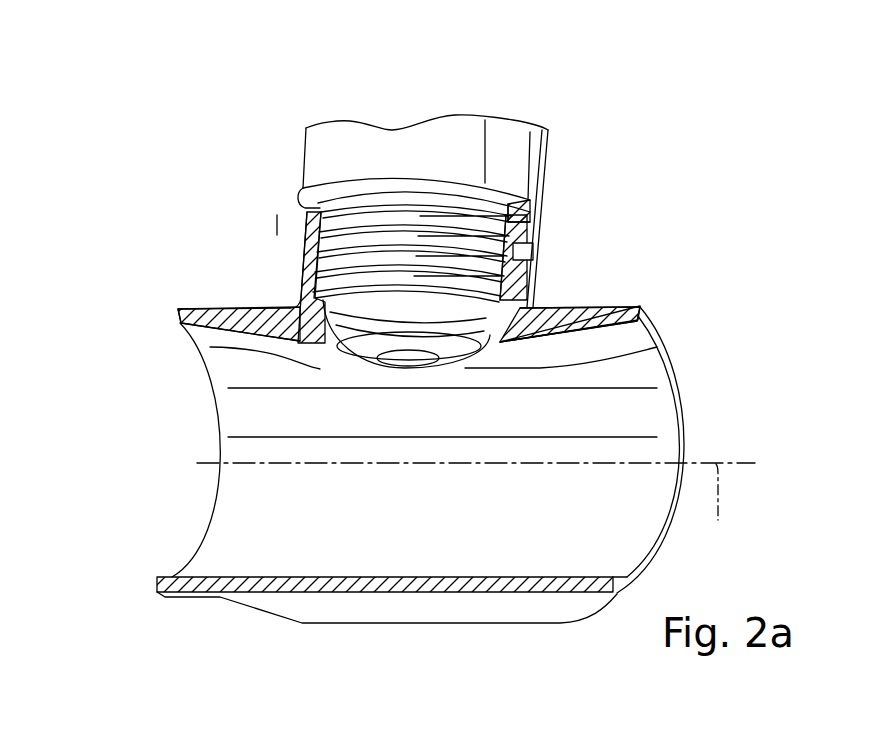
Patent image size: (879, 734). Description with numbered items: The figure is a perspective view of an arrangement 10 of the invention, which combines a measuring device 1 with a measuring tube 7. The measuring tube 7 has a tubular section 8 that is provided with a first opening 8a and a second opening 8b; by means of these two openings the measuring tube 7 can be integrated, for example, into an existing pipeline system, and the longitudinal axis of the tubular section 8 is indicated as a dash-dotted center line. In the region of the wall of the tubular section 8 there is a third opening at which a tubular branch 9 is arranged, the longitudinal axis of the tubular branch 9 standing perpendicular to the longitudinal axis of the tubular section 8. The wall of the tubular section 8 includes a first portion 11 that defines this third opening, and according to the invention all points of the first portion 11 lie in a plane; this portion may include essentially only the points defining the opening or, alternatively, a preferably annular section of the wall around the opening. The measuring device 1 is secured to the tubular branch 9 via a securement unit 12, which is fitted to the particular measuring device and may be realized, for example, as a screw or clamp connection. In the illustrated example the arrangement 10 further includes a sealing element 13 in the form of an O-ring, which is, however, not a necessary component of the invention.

The measuring device 1 is at (452, 98).
The measuring tube 7 is at (148, 347).
The tubular section 8 is at (191, 607).
The first opening 8a is at (146, 468).
The second opening 8b is at (706, 427).
The tubular branch 9 is at (286, 249).
The arrangement 10 is at (124, 98).
The first portion 11 is at (327, 362).
The securement unit 12 is at (540, 153).
The sealing element 13 is at (476, 333).